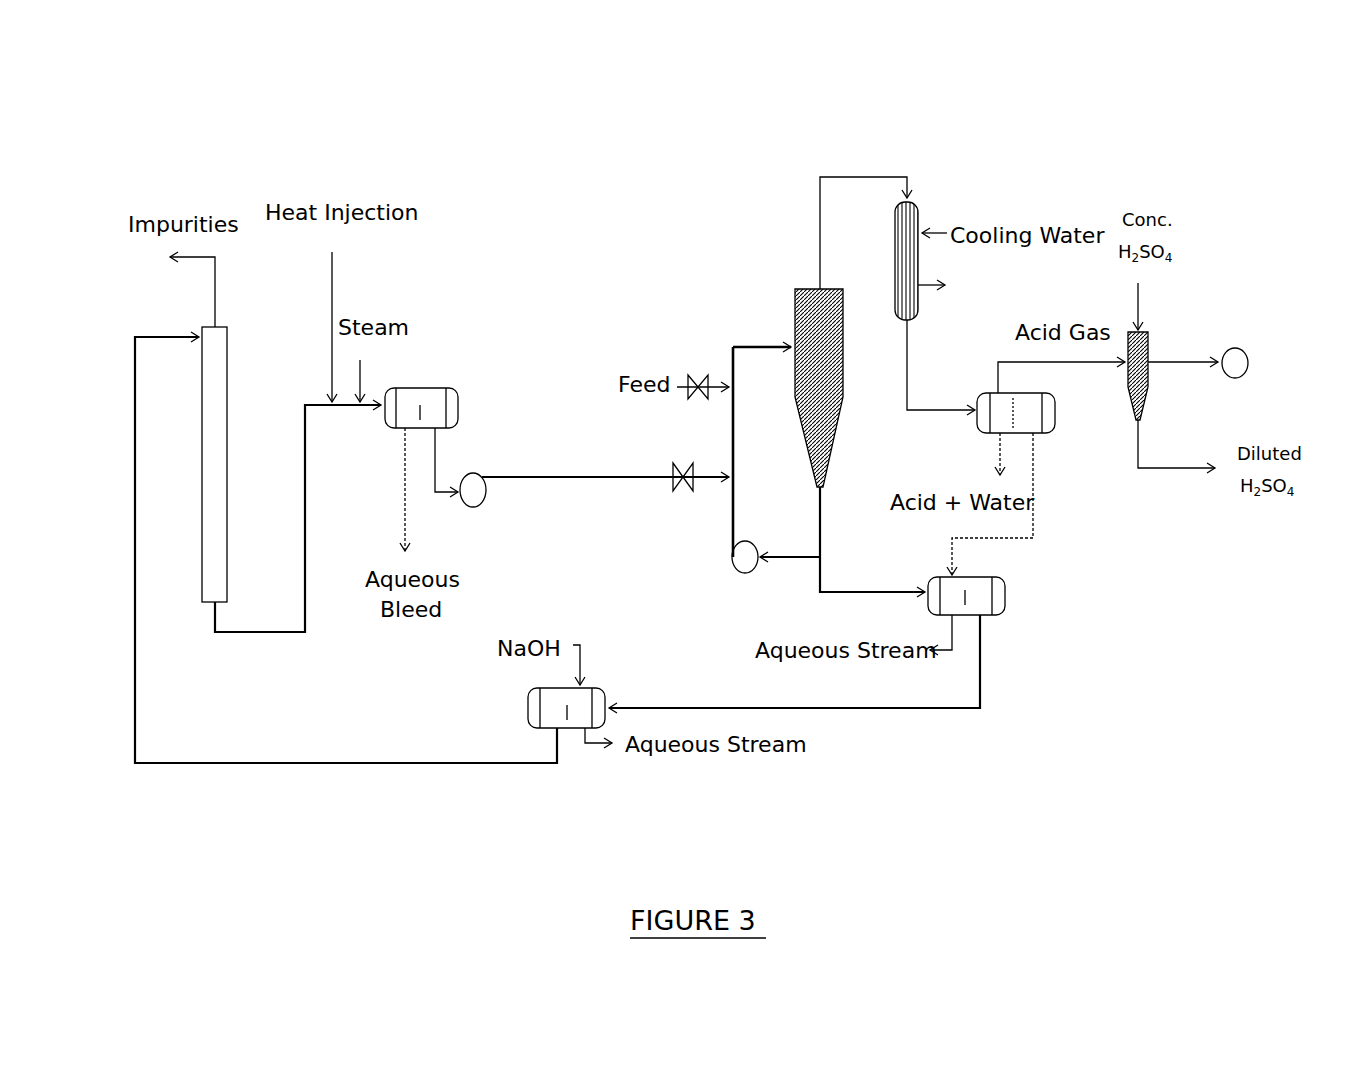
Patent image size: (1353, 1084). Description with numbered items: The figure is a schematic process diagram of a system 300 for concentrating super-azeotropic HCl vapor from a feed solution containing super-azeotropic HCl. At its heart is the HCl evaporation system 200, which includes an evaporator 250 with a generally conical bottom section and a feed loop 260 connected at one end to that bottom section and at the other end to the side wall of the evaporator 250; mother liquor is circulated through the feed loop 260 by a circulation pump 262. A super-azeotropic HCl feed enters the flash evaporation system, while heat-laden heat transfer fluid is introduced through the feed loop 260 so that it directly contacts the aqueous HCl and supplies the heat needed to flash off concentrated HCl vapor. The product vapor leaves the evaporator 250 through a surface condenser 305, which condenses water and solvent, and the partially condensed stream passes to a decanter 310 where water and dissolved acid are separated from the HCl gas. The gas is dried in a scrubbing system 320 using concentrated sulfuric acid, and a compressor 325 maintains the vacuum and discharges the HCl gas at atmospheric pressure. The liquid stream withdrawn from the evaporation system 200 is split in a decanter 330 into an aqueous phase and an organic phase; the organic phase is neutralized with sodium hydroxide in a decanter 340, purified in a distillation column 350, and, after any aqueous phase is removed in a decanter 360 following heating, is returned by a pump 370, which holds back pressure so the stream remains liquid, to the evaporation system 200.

The system 300 is at (478, 212).
The HCl evaporation system 200 is at (690, 280).
The evaporator 250 is at (800, 288).
The surface condenser 305 is at (917, 203).
The decanter 310 is at (1055, 413).
The scrubbing system 320 is at (1150, 345).
The compressor 325 is at (1245, 347).
The decanter 330 is at (1005, 595).
The decanter 340 is at (528, 705).
The distillation column 350 is at (228, 385).
The decanter 360 is at (462, 403).
The pump 370 is at (491, 504).
The feed loop 260 is at (818, 553).
The circulation pump 262 is at (733, 557).